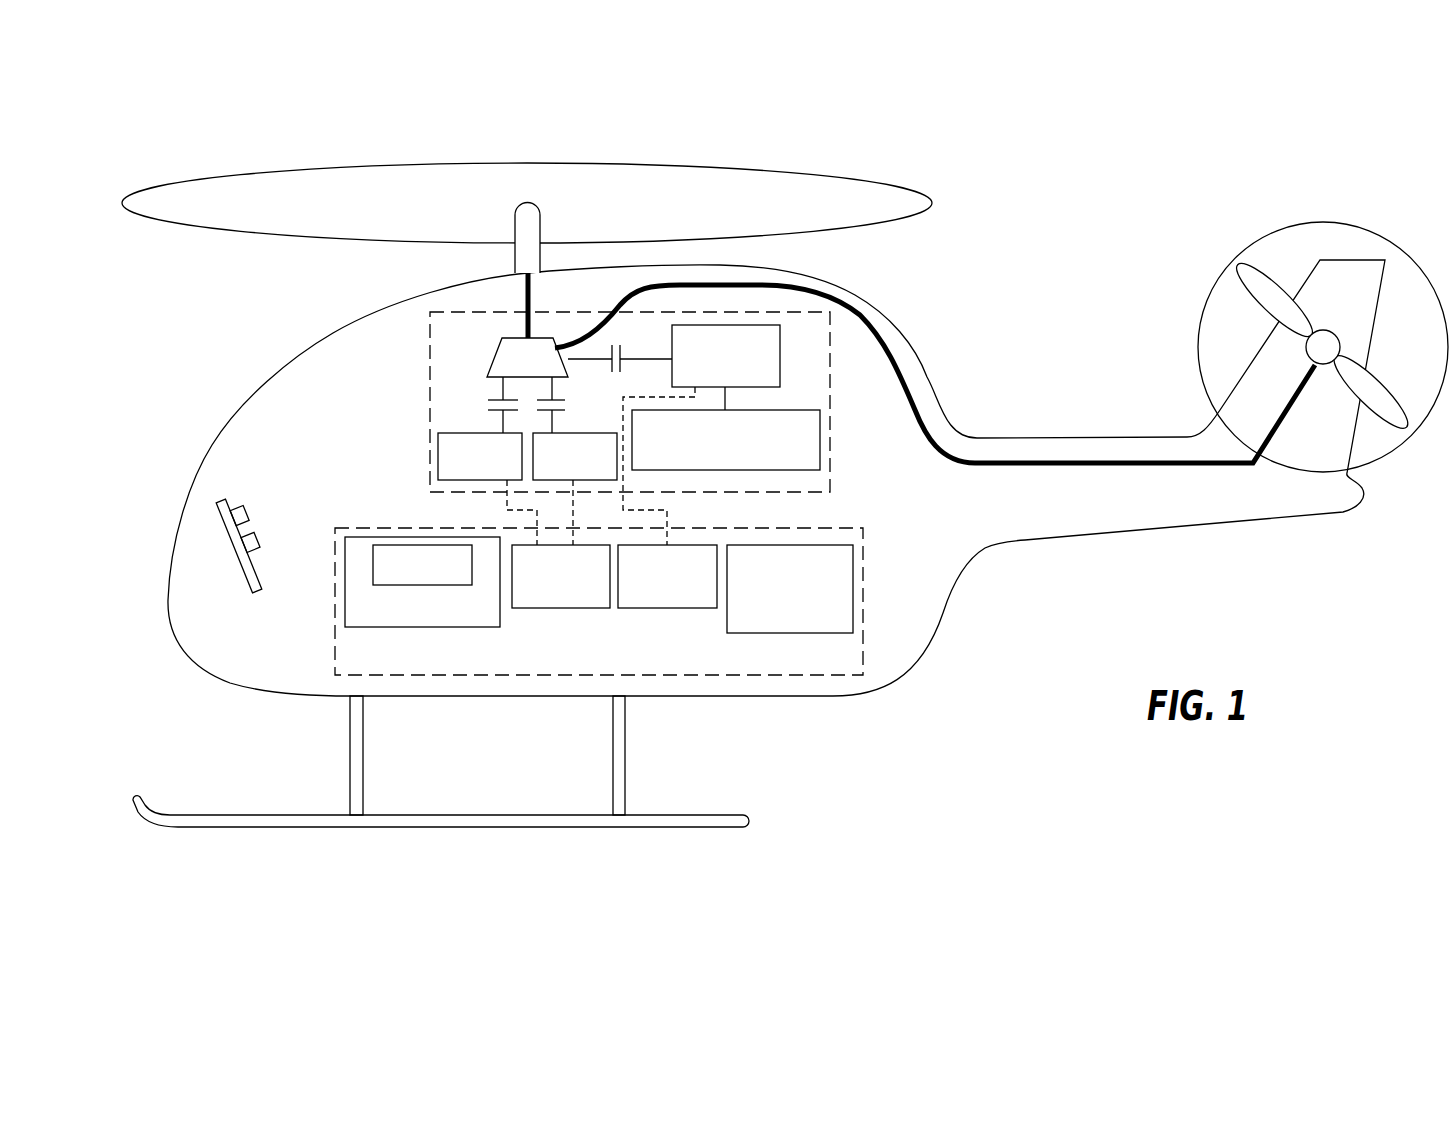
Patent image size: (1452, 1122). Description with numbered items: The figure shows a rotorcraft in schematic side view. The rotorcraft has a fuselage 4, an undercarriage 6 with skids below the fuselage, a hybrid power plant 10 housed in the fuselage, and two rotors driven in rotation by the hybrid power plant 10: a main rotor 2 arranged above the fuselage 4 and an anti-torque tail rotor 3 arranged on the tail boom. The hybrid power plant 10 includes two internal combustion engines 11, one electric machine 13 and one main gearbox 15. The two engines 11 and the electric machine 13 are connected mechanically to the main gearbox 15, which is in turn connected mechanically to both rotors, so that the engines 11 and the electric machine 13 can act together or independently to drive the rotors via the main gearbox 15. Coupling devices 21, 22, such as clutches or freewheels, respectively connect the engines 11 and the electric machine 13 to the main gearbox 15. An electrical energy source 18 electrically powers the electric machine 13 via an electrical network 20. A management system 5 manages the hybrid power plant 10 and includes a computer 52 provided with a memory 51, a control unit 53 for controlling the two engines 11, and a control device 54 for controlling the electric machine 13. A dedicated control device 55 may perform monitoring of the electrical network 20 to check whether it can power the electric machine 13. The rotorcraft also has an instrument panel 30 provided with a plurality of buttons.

The main rotor 2 is at (847, 178).
The anti-torque tail rotor 3 is at (1275, 232).
The fuselage 4 is at (249, 681).
The management system 5 is at (598, 588).
The undercarriage 6 is at (272, 828).
The hybrid power plant 10 is at (800, 312).
The internal combustion engine 11 is at (437, 442).
The electric machine 13 is at (780, 338).
The main gearbox 15 is at (497, 350).
The electrical energy source 18 is at (820, 432).
The electrical network 20 is at (725, 397).
The coupling device 21 is at (497, 402).
The coupling device 22 is at (625, 350).
The instrument panel 30 is at (252, 510).
The memory 51 is at (372, 563).
The computer 52 is at (345, 613).
The control unit 53 is at (520, 543).
The control device 54 is at (697, 545).
The dedicated control device 55 is at (854, 610).